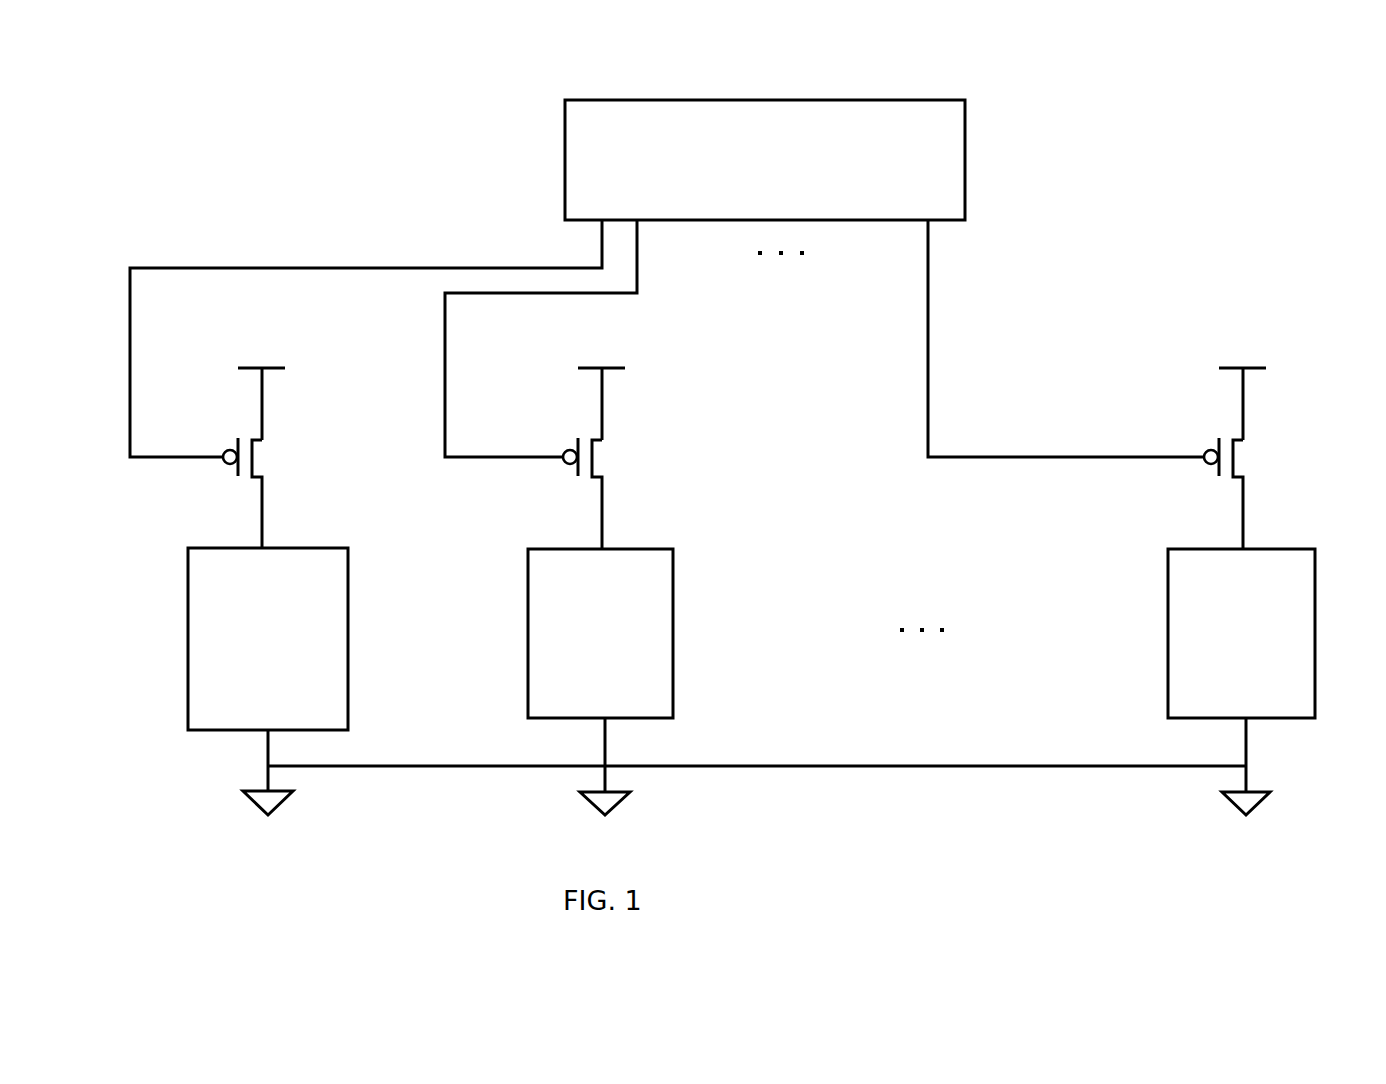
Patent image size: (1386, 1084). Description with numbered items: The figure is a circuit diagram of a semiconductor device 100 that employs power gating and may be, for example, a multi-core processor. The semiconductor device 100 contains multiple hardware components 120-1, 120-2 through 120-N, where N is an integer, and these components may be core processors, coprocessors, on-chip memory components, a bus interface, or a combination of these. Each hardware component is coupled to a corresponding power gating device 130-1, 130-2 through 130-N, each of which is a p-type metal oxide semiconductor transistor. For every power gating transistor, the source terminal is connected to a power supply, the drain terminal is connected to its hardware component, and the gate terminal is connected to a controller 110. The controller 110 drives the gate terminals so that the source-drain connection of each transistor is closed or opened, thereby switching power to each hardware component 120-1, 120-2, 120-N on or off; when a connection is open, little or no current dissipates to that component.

The semiconductor device 100 is at (1069, 95).
The controller 110 is at (943, 212).
The hardware component 120-1 is at (325, 721).
The hardware component 120-2 is at (663, 714).
The hardware component 120-N is at (1295, 714).
The power gating device 130-1 is at (252, 463).
The power gating device 130-2 is at (592, 463).
The power gating device 130-N is at (1233, 463).